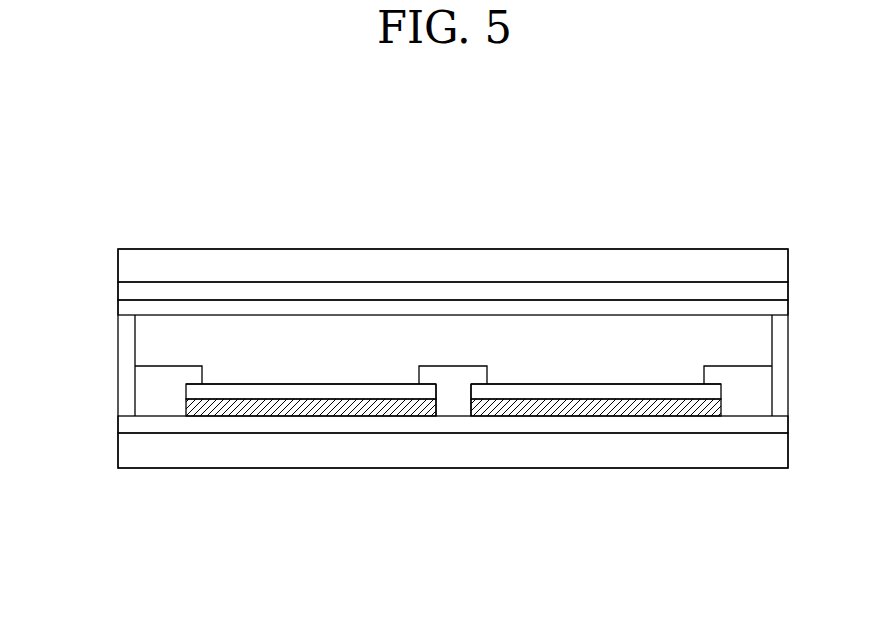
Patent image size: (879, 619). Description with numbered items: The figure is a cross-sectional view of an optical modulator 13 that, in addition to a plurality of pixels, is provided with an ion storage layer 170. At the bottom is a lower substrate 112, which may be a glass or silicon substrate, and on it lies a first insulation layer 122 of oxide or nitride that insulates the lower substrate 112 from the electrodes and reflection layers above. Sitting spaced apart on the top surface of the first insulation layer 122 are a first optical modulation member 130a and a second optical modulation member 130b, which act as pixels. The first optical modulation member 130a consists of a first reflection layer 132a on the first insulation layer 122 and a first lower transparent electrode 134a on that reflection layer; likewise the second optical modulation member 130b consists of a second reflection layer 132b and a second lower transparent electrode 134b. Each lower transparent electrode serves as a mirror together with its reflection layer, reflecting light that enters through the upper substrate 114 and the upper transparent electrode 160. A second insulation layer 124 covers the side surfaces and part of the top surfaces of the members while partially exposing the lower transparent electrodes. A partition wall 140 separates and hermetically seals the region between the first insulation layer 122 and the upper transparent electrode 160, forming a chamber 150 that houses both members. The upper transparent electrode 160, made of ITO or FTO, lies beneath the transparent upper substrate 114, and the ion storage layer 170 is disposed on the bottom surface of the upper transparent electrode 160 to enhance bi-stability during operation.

The optical modulator 13 is at (776, 153).
The lower substrate 112 is at (130, 450).
The upper substrate 114 is at (128, 263).
The first insulation layer 122 is at (130, 423).
The second insulation layer 124 is at (146, 397).
The first optical modulation member 130a is at (370, 532).
The second optical modulation member 130b is at (653, 532).
The first reflection layer 132a is at (342, 412).
The second reflection layer 132b is at (628, 412).
The first lower transparent electrode 134a is at (272, 392).
The second lower transparent electrode 134b is at (557, 392).
The partition wall 140 is at (128, 368).
The chamber 150 is at (685, 333).
The upper transparent electrode 160 is at (128, 290).
The ion storage layer 170 is at (128, 308).